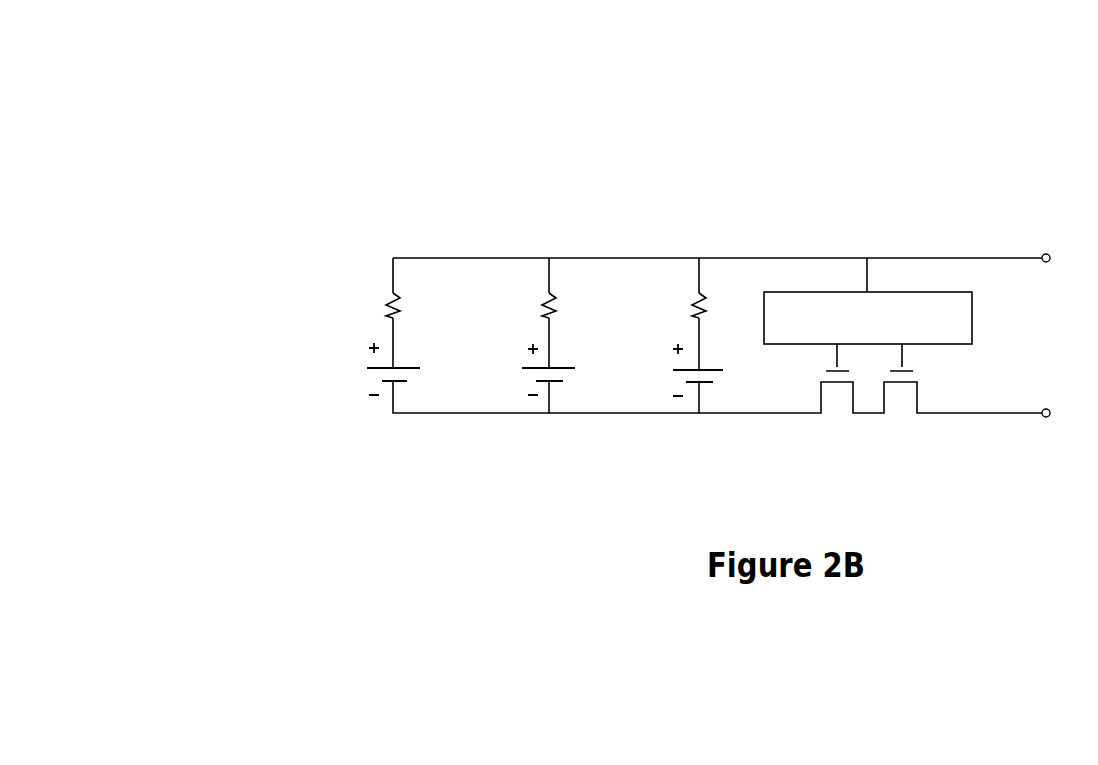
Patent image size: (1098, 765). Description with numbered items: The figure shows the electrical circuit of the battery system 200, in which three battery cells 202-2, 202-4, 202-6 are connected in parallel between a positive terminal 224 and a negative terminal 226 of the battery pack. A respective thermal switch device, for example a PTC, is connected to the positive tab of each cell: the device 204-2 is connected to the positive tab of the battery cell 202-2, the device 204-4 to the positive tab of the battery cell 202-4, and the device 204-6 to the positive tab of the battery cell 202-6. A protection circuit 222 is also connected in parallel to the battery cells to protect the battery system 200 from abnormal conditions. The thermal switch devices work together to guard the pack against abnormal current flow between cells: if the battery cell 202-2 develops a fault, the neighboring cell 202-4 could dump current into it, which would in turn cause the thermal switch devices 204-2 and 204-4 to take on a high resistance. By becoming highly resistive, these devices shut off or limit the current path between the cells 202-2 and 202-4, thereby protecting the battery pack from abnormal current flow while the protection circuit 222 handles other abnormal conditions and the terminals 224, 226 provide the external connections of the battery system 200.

The battery system 200 is at (383, 95).
The battery cell 202-2 is at (366, 372).
The battery cell 202-4 is at (521, 373).
The battery cell 202-6 is at (669, 374).
The thermal switch device 204-2 is at (382, 297).
The thermal switch device 204-4 is at (538, 298).
The thermal switch device 204-6 is at (689, 300).
The protection circuit 222 is at (868, 314).
The positive terminal 224 is at (1050, 254).
The negative terminal 226 is at (1050, 417).